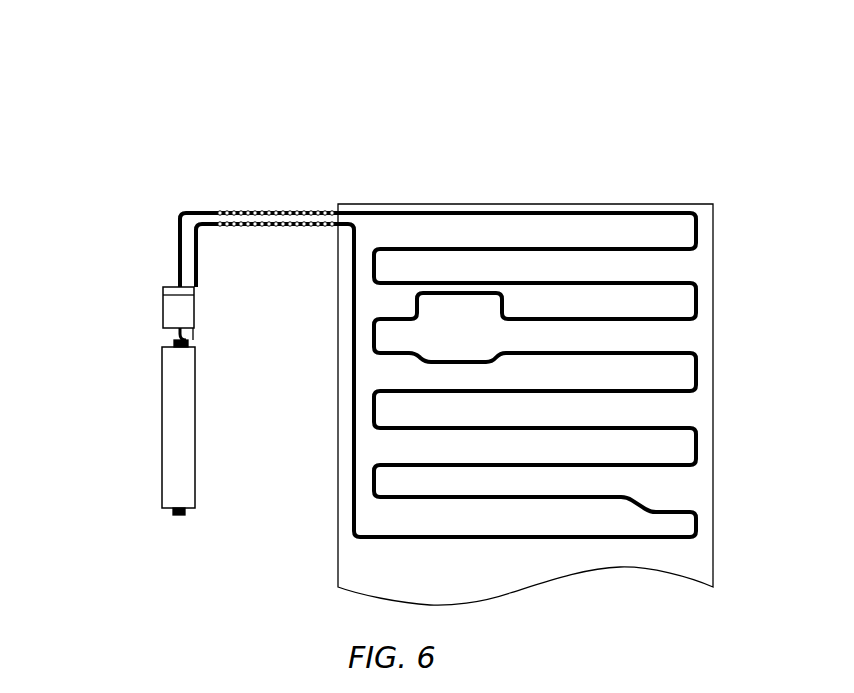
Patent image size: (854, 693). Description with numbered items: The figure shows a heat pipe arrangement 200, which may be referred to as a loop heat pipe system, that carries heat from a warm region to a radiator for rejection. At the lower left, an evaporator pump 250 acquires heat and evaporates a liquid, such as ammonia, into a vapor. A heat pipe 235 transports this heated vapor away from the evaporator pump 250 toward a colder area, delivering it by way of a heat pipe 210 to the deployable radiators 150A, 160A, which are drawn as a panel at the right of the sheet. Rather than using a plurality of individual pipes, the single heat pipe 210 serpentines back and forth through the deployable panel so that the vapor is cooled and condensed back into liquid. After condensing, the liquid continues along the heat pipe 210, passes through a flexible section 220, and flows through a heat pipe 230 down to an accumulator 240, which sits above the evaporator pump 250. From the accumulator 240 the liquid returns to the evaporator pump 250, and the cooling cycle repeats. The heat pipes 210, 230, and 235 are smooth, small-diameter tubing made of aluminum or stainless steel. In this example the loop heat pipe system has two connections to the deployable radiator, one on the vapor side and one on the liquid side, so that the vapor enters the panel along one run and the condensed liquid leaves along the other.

The heat pipe arrangement 200 is at (456, 94).
The heat pipe 210 is at (431, 200).
The flexible section 220 is at (257, 203).
The heat pipe 230 is at (168, 230).
The heat pipe 235 is at (203, 268).
The accumulator 240 is at (162, 299).
The evaporator pump 250 is at (206, 401).
The deployable radiator 150A is at (659, 192).
The deployable radiator 160A is at (565, 374).